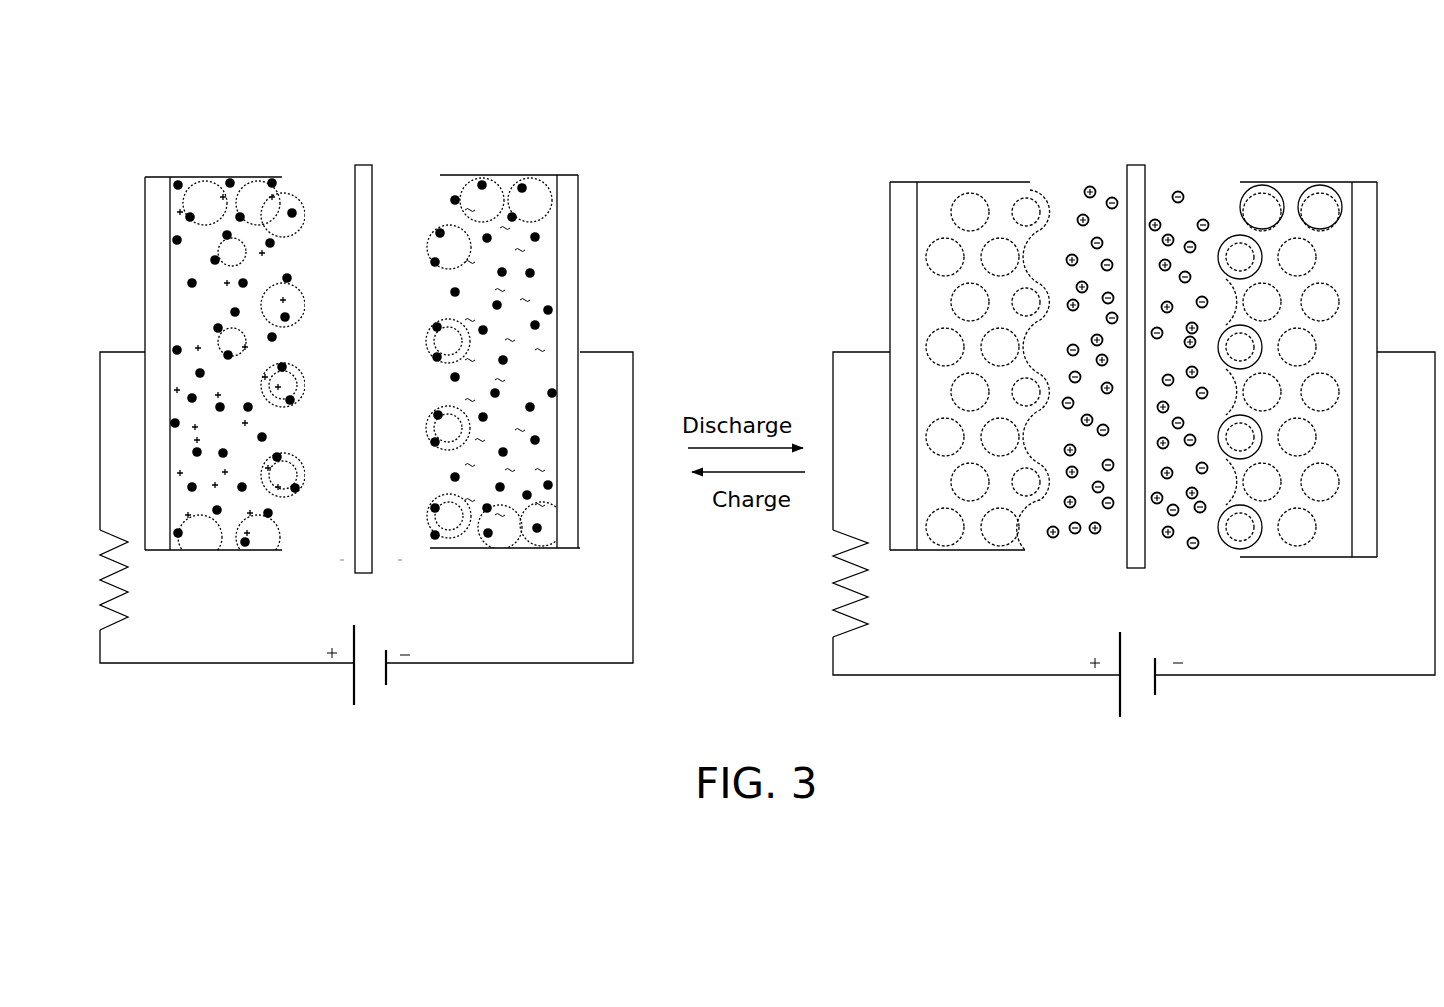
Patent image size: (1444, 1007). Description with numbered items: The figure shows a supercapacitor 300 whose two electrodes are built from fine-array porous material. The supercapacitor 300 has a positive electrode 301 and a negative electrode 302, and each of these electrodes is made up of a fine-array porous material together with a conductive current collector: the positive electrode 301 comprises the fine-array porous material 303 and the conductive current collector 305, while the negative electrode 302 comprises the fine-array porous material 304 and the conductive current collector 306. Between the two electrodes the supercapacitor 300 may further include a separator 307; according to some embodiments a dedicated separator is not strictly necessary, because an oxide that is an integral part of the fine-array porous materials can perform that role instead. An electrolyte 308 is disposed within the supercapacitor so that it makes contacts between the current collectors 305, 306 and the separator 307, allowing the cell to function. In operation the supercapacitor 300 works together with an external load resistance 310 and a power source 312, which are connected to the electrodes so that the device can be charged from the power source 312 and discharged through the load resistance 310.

The supercapacitor 300 is at (1092, 157).
The positive electrode 301 is at (243, 176).
The negative electrode 302 is at (503, 174).
The fine-array porous material 303 is at (207, 547).
The fine-array porous material 304 is at (519, 540).
The conductive current collector 305 is at (165, 198).
The conductive current collector 306 is at (579, 185).
The separator 307 is at (372, 166).
The electrolyte 308 is at (399, 555).
The load resistance 310 is at (869, 608).
The power source 312 is at (1145, 646).